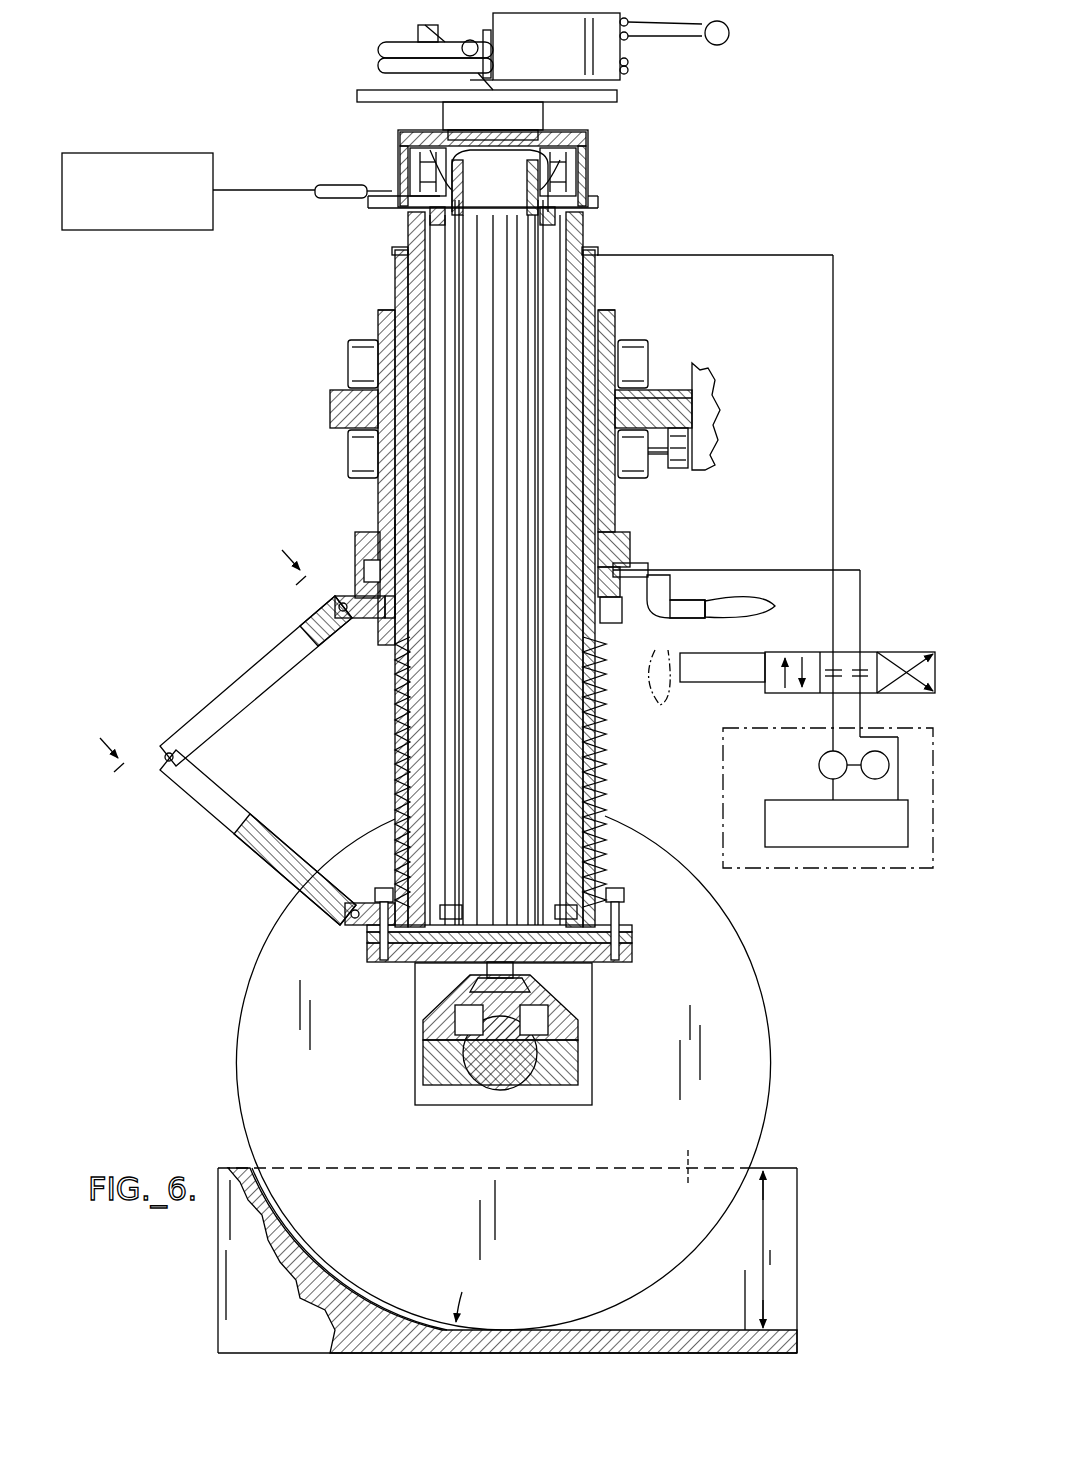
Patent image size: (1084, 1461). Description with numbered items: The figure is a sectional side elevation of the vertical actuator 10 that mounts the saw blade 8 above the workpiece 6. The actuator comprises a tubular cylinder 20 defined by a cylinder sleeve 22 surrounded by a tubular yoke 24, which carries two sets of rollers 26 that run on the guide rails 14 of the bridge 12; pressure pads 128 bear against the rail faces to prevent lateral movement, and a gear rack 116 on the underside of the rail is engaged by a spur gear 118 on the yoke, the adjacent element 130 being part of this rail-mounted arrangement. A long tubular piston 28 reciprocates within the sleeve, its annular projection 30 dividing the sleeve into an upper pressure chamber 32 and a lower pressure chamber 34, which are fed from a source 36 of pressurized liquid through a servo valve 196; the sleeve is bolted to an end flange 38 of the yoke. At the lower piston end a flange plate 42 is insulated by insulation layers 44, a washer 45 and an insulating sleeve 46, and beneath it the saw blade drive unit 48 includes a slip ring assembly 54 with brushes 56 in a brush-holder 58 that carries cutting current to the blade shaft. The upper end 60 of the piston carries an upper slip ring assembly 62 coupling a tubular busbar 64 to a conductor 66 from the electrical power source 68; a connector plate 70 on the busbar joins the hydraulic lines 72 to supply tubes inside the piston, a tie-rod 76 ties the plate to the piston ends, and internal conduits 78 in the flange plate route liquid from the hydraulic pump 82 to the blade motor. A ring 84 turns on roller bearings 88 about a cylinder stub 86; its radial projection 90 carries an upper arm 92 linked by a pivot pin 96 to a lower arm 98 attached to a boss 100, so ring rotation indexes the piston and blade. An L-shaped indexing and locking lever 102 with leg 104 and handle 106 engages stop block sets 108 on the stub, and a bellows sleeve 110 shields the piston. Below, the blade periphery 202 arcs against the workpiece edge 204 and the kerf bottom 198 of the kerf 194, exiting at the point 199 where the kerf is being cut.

The workpiece 6 is at (222, 1290).
The saw blade 8 is at (247, 1045).
The vertical actuator 10 is at (276, 234).
The bridge 12 is at (712, 410).
The guide rails 14 is at (690, 400).
The cylinder 20 is at (378, 312).
The cylinder sleeve 22 is at (396, 278).
The yoke 24 is at (385, 315).
The rollers 26 is at (352, 370).
The piston 28 is at (415, 498).
The annular projection 30 is at (400, 522).
The upper pressure chamber 32 is at (340, 405).
The lower pressure chamber 34 is at (380, 560).
The source of pressurized liquid 36 is at (825, 860).
The end flange 38 is at (630, 541).
The flange plate 42 is at (632, 946).
The insulation layers 44 is at (632, 932).
The washer 45 is at (618, 892).
The insulating sleeve 46 is at (632, 914).
The roller head assembly 48 is at (596, 1015).
The slip ring assembly 54 is at (422, 1031).
The brushes 56 is at (436, 1056).
The brush-holder 58 is at (440, 1005).
The upper end of the piston 60 is at (410, 237).
The upper slip ring assembly 62 is at (592, 162).
The tubular busbar 64 is at (545, 272).
The conductor 66 is at (357, 183).
The electrical power source 68 is at (175, 158).
The connector plate 70 is at (357, 95).
The hydraulic lines 72 is at (470, 292).
The tie-rod 76 is at (500, 208).
The internal conduits 78 is at (532, 972).
The hydraulic pump 82 is at (729, 33).
The ring 84 is at (612, 602).
The cylinder stub 86 is at (622, 570).
The roller bearings 88 is at (606, 612).
The radial projection 90 is at (335, 605).
The upper arm 92 is at (276, 650).
The pivot pin 96 is at (167, 754).
The lower arm 98 is at (280, 864).
The boss 100 is at (352, 922).
The indexing and locking lever 102 is at (698, 598).
The lever leg 104 is at (657, 600).
The handle 106 is at (760, 600).
The stop block sets 108 is at (665, 568).
The bellows sleeve 110 is at (605, 770).
The gear rack 116 is at (688, 440).
The spur gear 118 is at (688, 456).
The pressure pads 128 is at (640, 395).
The clamp 130 is at (640, 468).
The kerf 194 is at (785, 1230).
The servo valve 196 is at (878, 652).
The kerf bottom 198 is at (775, 1330).
The point 199 is at (270, 1166).
The blade periphery 202 is at (237, 1080).
The workpiece edge 204 is at (797, 1170).